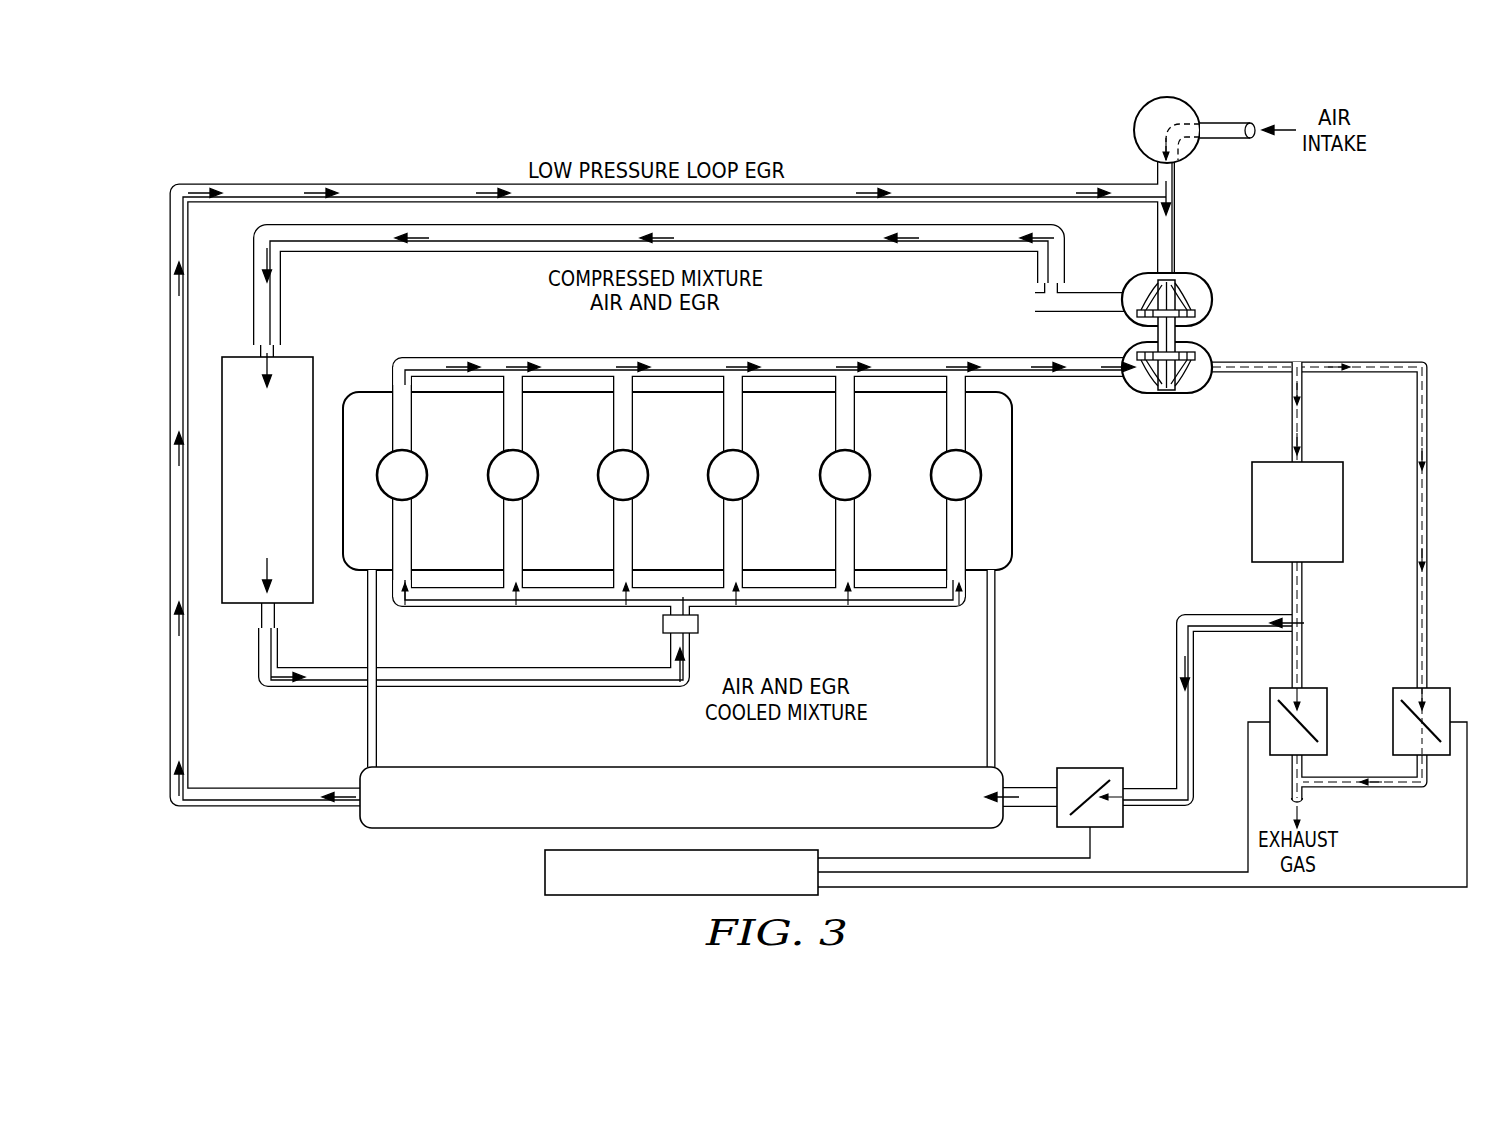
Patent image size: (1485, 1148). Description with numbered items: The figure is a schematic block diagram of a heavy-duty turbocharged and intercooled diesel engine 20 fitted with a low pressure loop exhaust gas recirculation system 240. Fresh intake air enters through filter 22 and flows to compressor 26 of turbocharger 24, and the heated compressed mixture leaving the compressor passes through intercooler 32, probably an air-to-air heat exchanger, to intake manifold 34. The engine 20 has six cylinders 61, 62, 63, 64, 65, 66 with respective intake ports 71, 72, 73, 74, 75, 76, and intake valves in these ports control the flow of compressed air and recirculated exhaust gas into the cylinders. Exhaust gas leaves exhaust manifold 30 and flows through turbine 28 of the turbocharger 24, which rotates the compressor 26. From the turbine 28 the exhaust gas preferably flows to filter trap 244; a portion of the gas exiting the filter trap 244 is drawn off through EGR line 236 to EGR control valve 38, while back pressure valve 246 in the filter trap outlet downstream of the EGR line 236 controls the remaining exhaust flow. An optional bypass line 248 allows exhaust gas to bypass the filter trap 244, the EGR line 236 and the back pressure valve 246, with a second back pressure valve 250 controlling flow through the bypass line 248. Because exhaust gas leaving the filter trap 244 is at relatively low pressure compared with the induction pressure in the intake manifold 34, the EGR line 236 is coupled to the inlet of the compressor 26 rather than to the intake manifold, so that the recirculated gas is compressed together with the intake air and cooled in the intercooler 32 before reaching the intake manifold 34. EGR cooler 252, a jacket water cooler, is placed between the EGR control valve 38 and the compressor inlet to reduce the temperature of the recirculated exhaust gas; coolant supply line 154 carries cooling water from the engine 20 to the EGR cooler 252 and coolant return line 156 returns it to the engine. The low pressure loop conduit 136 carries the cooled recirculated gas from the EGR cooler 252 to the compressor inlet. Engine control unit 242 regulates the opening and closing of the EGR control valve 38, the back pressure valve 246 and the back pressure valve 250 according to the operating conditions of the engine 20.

The internal combustion engine 20 is at (1022, 480).
The filter 22 is at (1134, 132).
The turbocharger 24 is at (1247, 306).
The compressor 26 is at (1205, 273).
The turbine 28 is at (1185, 394).
The exhaust manifold 30 is at (908, 357).
The intercooler 32 is at (232, 357).
The intake manifold 34 is at (900, 608).
The EGR control valve 38 is at (1100, 828).
The cylinder 61 is at (418, 458).
The cylinder 62 is at (529, 458).
The cylinder 63 is at (639, 458).
The cylinder 64 is at (750, 458).
The cylinder 65 is at (861, 458).
The cylinder 66 is at (974, 458).
The intake port 71 is at (412, 548).
The intake port 72 is at (523, 548).
The intake port 73 is at (633, 548).
The intake port 74 is at (743, 548).
The intake port 75 is at (855, 528).
The intake port 76 is at (947, 540).
The low pressure loop EGR conduit 136 is at (245, 184).
The coolant supply line 154 is at (367, 725).
The coolant return line 156 is at (996, 661).
The EGR line 236 is at (1195, 681).
The exhaust gas recirculation system 240 is at (1203, 796).
The engine control unit 242 is at (545, 872).
The filter trap 244 is at (1252, 512).
The back pressure valve 246 is at (1318, 688).
The bypass line 248 is at (1413, 362).
The back pressure valve 250 is at (1441, 688).
The EGR cooler 252 is at (433, 829).